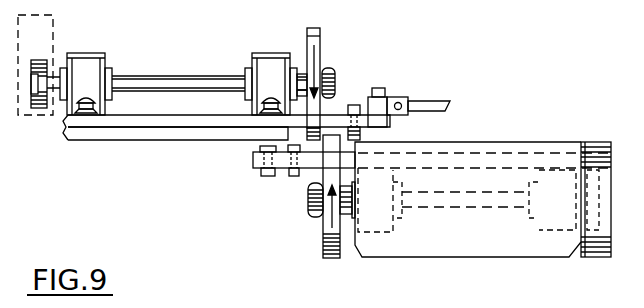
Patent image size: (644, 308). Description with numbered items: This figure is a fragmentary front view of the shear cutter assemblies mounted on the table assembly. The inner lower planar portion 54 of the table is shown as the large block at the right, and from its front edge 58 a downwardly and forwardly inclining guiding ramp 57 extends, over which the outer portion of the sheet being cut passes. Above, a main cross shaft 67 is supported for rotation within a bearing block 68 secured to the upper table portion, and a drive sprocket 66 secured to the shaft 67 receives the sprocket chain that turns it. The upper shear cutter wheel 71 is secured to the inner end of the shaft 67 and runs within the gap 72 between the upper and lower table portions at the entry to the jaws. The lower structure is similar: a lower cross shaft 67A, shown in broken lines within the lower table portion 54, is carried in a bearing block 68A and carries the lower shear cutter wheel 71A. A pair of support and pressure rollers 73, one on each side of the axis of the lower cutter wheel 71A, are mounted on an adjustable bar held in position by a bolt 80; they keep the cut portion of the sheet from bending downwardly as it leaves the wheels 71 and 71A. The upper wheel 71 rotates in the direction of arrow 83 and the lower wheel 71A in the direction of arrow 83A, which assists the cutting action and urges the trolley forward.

The inner lower planar portion 54 is at (468, 187).
The guiding ramp 57 is at (562, 187).
The front edge 58 is at (484, 143).
The drive sprocket 66 is at (33, 101).
The main cross shaft 67 is at (177, 54).
The main cross shaft 67A is at (465, 216).
The bearing block 68 is at (183, 66).
The bearing block 68A is at (467, 209).
The shear cutter wheel 71 is at (334, 81).
The lower shear cutter wheel 71A is at (313, 202).
The gap 72 is at (256, 110).
The support and pressure rollers 73 is at (304, 173).
The bolt 80 is at (267, 176).
The arrow 83 is at (341, 70).
The arrow 83A is at (298, 214).